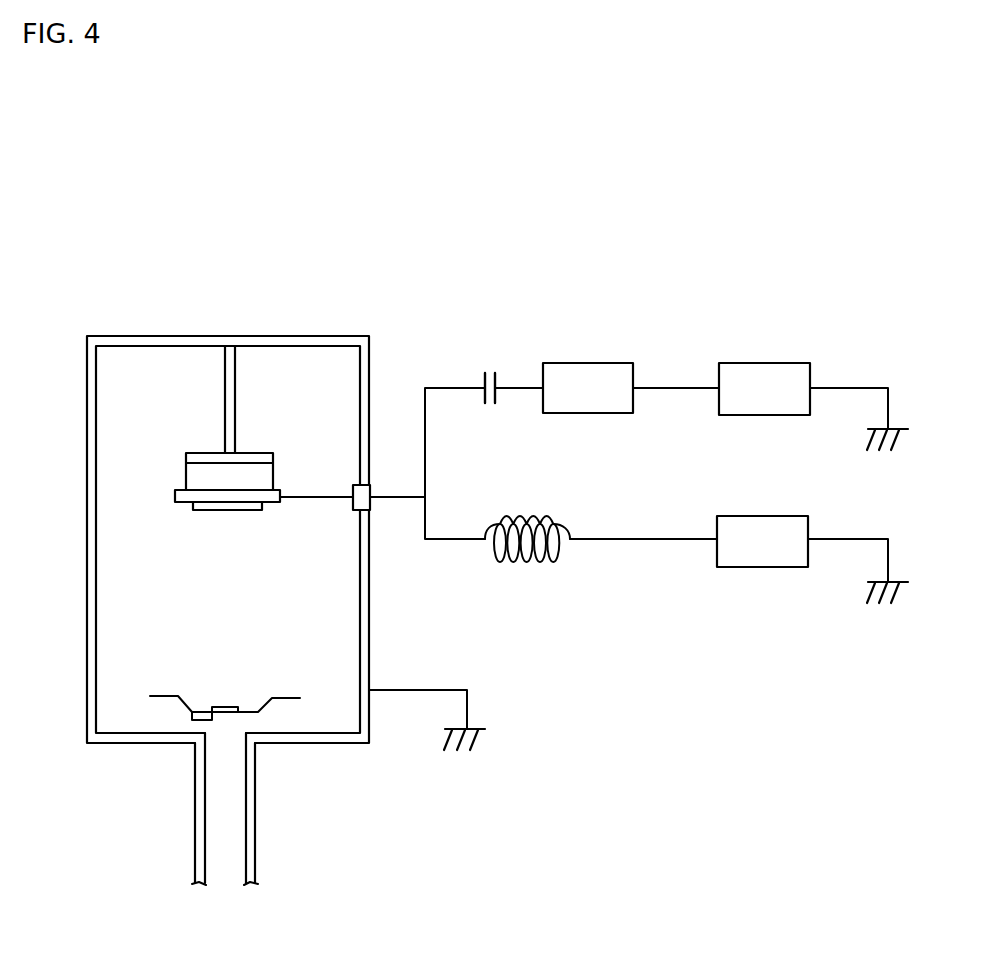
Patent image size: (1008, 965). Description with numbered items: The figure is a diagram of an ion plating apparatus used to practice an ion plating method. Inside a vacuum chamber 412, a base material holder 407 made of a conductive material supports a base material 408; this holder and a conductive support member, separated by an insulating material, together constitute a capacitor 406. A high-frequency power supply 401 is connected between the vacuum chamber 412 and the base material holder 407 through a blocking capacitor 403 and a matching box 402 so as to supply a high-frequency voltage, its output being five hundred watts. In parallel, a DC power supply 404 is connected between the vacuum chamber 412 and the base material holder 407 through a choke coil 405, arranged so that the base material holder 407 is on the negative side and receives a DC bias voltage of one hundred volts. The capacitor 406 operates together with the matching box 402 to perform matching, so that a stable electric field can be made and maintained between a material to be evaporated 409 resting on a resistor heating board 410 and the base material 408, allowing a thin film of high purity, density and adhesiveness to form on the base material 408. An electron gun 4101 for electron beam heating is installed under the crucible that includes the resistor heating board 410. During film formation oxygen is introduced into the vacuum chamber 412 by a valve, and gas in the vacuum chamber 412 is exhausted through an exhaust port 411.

The high-frequency power supply 401 is at (765, 363).
The matching box 402 is at (588, 362).
The blocking capacitor 403 is at (490, 365).
The DC power supply 404 is at (765, 516).
The choke coil 405 is at (523, 513).
The capacitor 406 is at (275, 478).
The base material holder 407 is at (277, 503).
The base material 408 is at (237, 512).
The material to be evaporated 409 is at (222, 707).
The resistor heating board 410 is at (258, 707).
The electron gun 4101 is at (192, 713).
The exhaust port 411 is at (255, 813).
The vacuum chamber 412 is at (222, 335).